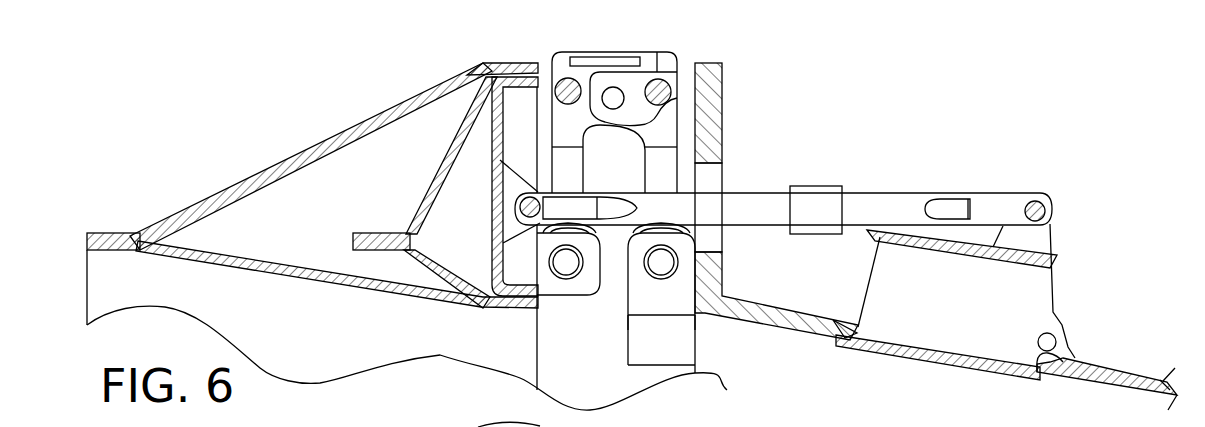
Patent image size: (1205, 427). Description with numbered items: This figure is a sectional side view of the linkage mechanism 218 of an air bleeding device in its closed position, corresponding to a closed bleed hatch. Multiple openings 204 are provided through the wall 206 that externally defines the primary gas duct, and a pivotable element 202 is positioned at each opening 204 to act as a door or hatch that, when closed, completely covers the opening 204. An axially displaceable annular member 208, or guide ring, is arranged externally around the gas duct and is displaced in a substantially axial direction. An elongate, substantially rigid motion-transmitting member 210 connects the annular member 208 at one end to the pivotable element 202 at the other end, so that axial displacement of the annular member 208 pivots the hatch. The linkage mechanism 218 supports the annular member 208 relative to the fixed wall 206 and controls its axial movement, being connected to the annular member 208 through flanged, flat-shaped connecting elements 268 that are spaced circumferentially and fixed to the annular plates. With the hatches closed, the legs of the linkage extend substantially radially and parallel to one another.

The pivotable element 202 is at (960, 365).
The opening 204 is at (872, 373).
The wall 206 is at (1115, 378).
The annular member 208 is at (262, 143).
The motion-transmitting member 210 is at (875, 205).
The linkage mechanism 218 is at (578, 30).
The flanged, flat-shaped connecting element 268 is at (490, 195).